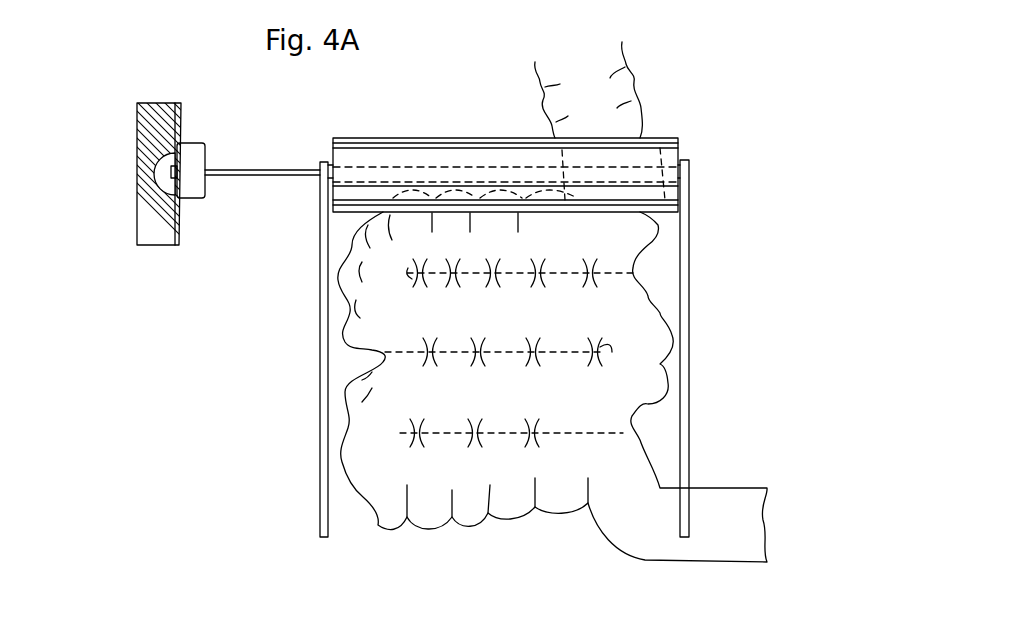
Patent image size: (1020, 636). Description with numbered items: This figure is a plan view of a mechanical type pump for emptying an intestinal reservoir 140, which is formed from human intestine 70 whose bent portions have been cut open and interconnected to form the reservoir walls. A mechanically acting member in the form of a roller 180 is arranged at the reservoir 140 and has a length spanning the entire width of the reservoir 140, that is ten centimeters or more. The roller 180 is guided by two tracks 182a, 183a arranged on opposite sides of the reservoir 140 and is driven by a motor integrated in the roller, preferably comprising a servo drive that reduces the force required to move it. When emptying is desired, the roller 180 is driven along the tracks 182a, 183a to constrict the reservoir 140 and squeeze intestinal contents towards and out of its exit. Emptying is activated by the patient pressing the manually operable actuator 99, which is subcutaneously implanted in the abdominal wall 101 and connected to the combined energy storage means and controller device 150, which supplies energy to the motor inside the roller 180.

The human intestine 70 is at (622, 86).
The manually operable actuator 99 is at (157, 175).
The abdominal wall 101 is at (138, 138).
The reservoir 140 is at (503, 500).
The combined energy storage means and controller device 150 is at (199, 146).
The roller 180 is at (452, 152).
The track 182a is at (689, 358).
The track 183a is at (320, 360).